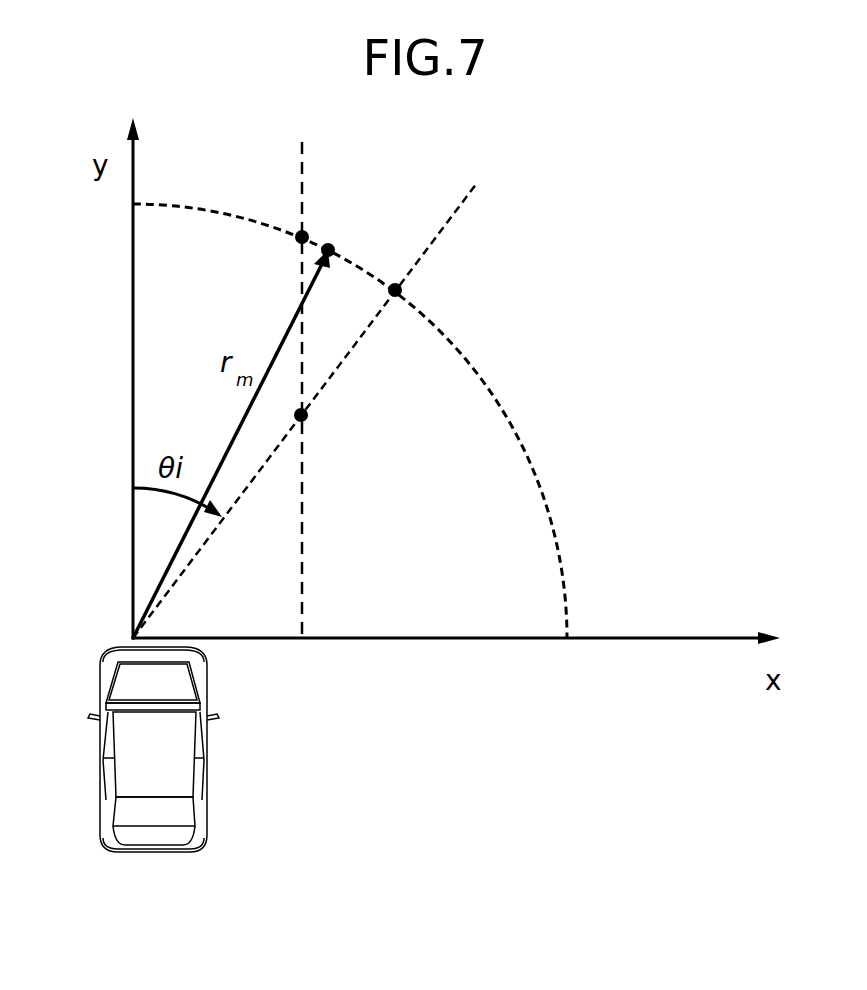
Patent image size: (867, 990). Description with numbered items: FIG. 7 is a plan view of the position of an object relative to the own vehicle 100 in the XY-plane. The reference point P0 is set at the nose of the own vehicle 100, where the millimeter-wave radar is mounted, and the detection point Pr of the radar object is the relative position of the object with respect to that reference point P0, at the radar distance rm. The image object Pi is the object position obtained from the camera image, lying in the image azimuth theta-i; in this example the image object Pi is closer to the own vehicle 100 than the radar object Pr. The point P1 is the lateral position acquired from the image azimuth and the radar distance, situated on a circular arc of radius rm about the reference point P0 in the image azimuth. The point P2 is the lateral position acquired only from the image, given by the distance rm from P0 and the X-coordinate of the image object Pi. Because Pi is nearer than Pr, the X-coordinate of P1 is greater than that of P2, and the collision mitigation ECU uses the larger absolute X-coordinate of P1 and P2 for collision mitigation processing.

The vehicle 100 is at (207, 740).
The reference point P0 is at (133, 637).
The lateral position acquired from the image azimuth and the radar distance P1 is at (403, 290).
The lateral position acquired only from the image P2 is at (297, 242).
The detection point of the radar object Pr is at (335, 246).
The image object Pi is at (309, 414).